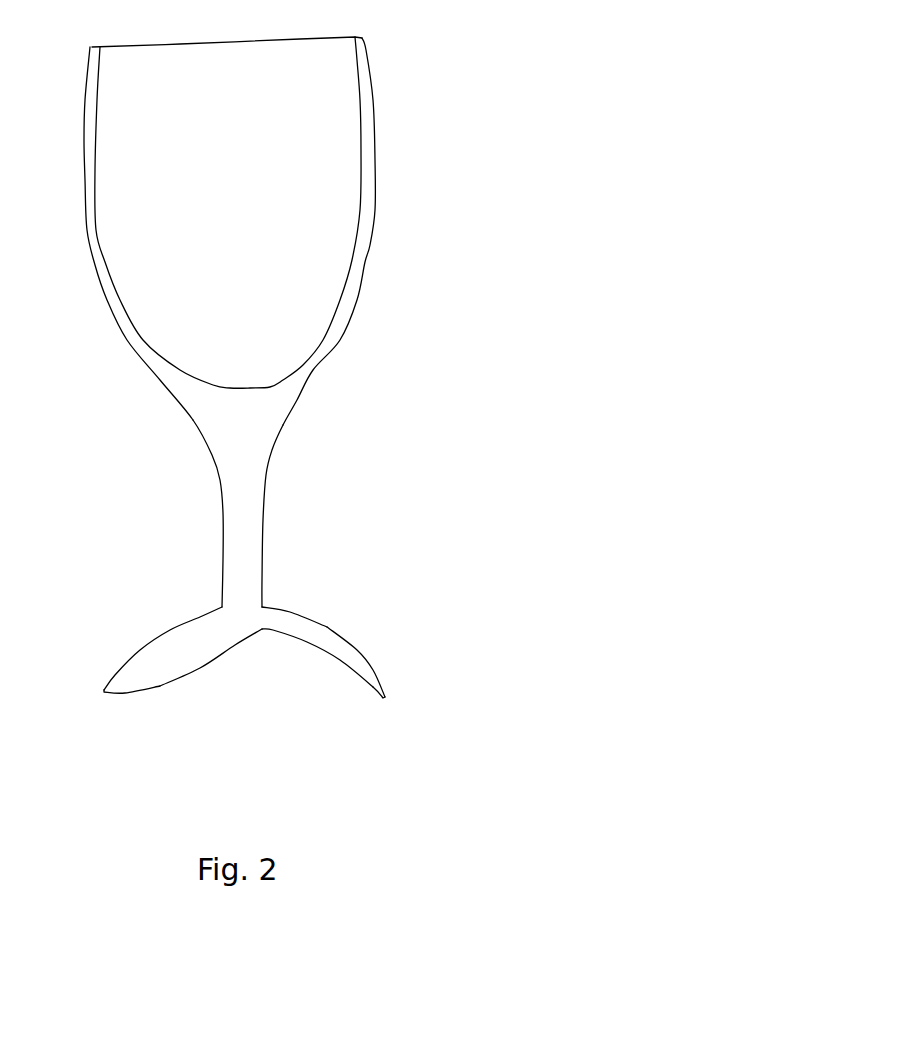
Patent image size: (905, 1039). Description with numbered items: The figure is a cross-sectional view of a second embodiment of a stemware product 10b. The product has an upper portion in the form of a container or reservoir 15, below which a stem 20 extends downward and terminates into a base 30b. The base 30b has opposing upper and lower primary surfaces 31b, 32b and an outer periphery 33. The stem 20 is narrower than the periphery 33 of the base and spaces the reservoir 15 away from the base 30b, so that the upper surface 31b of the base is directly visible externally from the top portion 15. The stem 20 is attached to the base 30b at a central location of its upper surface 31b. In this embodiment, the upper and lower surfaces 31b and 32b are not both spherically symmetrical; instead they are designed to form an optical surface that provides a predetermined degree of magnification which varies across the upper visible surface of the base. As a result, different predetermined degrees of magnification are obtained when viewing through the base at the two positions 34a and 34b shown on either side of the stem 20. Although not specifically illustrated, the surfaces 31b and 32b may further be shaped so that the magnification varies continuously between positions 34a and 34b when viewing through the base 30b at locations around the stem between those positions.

The stemware product 10b is at (455, 88).
The container or reservoir 15 is at (327, 233).
The stem 20 is at (248, 477).
The base 30b is at (328, 638).
The upper primary surface 31b is at (370, 658).
The lower primary surface 32b is at (338, 665).
The periphery 33 is at (100, 688).
The first viewing position 34a is at (178, 600).
The second viewing position 34b is at (350, 619).